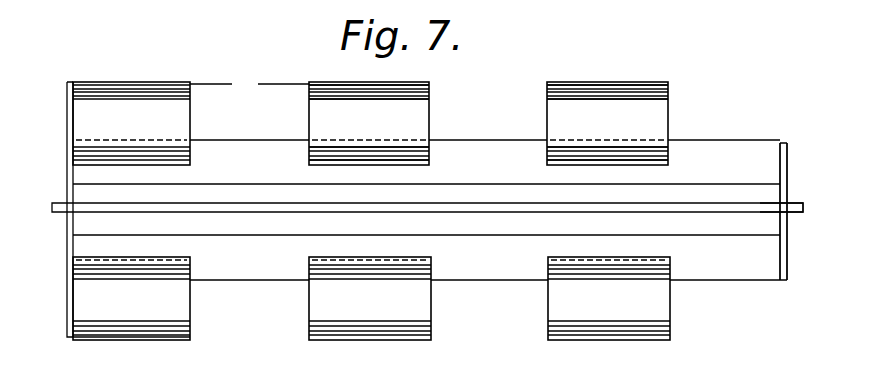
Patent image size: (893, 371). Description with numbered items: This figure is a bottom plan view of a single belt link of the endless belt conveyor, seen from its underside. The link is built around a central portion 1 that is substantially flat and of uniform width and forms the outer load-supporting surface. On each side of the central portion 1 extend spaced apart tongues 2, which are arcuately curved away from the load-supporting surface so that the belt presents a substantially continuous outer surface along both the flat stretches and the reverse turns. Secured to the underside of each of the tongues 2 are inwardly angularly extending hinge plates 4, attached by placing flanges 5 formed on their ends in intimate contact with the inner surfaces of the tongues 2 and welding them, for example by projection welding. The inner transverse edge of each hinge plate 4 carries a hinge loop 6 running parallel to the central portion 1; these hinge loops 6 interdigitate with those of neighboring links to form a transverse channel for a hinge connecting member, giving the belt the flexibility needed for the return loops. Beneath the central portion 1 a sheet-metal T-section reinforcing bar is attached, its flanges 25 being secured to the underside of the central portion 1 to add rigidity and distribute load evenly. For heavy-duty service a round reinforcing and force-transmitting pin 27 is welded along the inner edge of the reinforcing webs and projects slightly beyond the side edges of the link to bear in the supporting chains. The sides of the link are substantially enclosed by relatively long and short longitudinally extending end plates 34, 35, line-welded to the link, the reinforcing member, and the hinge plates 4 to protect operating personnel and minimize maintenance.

The central portion 1 is at (240, 150).
The tongues 2 is at (249, 85).
The hinge plates 4 is at (562, 112).
The flanges 5 is at (547, 93).
The hinge loop 6 is at (547, 141).
The flanges 25 is at (83, 193).
The reinforcing and force-transmitting round bar or pin 27 is at (762, 210).
The long end plate 34 is at (68, 117).
The short end plate 35 is at (790, 151).